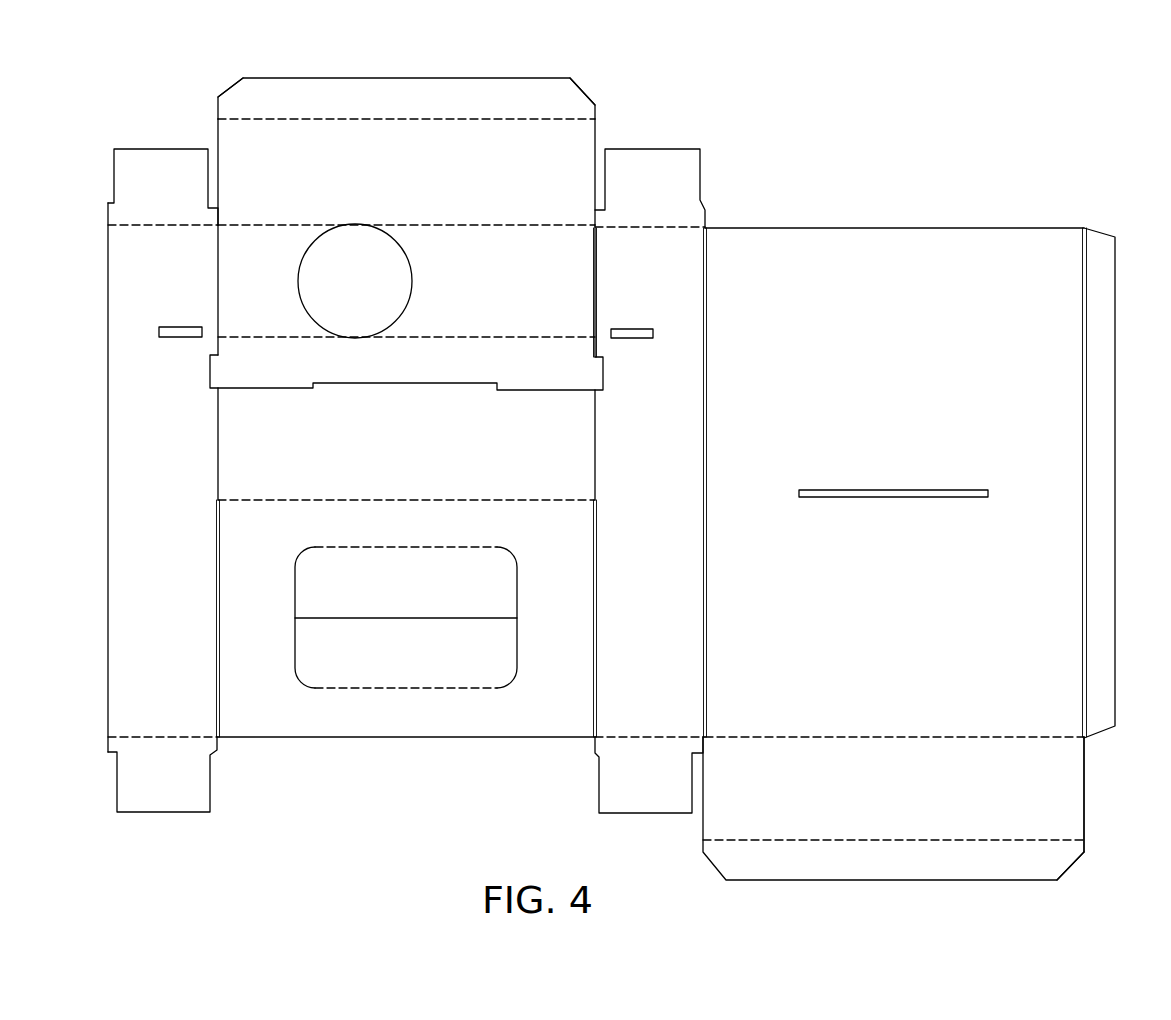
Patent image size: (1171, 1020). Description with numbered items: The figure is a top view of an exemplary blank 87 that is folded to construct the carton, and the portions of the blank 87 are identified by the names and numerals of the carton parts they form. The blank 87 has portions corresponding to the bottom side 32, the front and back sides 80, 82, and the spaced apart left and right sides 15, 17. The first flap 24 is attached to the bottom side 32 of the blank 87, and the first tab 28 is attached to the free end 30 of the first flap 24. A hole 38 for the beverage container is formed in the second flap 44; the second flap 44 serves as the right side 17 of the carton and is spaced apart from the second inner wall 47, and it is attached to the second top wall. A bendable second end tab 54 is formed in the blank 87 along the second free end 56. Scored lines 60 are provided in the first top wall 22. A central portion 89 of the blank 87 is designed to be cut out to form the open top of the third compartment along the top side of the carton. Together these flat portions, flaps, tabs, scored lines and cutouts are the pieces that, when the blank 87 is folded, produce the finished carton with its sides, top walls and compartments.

The left side 15 is at (907, 803).
The right side 17 is at (281, 88).
The first top wall 22 is at (585, 573).
The first flap 24 is at (462, 185).
The first tab 28 is at (1068, 858).
The free end 30 is at (793, 838).
The bottom side 32 is at (912, 372).
The hole 38 is at (360, 226).
The second flap 44 is at (519, 295).
The second inner wall 47 is at (543, 378).
The second end tab 54 is at (540, 88).
The second free end 56 is at (245, 118).
The scored lines 60 is at (465, 549).
The front side 80 is at (669, 492).
The back side 82 is at (176, 489).
The blank 87 is at (418, 808).
The central portion 89 is at (472, 470).